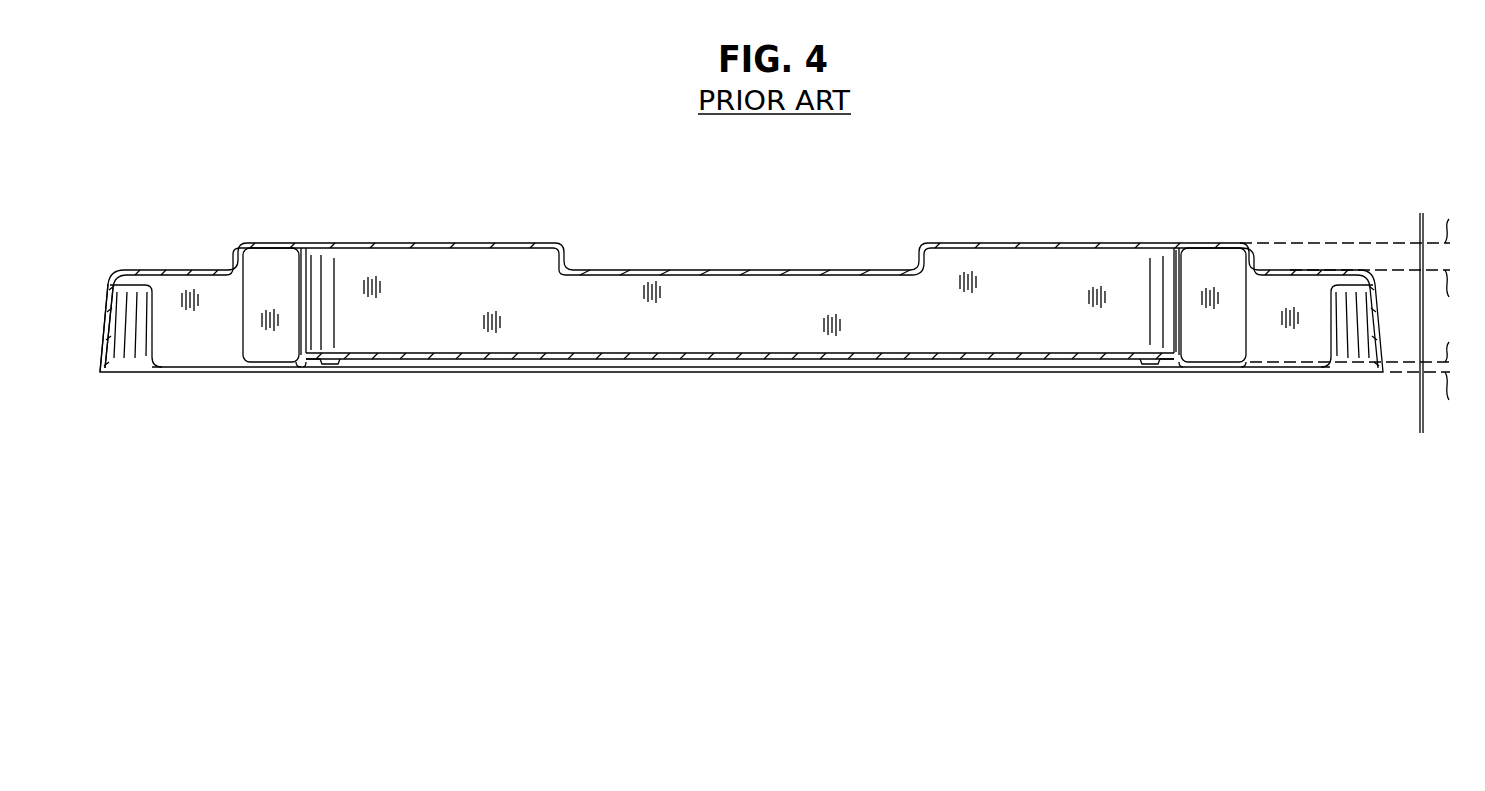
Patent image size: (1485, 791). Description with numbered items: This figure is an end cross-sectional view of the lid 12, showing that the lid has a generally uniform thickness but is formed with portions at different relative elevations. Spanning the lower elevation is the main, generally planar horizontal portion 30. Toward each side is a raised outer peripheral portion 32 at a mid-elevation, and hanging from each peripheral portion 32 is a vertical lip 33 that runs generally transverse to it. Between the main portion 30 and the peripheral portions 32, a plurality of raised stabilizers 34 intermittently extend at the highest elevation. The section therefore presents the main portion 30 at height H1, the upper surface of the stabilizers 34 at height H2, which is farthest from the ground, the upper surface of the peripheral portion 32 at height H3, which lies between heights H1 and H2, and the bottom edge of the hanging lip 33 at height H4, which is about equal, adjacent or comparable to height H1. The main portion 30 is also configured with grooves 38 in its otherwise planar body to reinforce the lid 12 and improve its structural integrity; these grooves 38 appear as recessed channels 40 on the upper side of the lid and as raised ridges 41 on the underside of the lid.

The lid 12 is at (1062, 166).
The main horizontal portion 30 is at (762, 358).
The raised outer peripheral portion 32 is at (742, 270).
The hanging vertical lip 33 is at (1380, 305).
The raised stabilizers 34 is at (455, 243).
The grooves 38 is at (1157, 365).
The recessed channels 40 is at (330, 362).
The raised ridges 41 is at (324, 368).
The height of main portion H1 is at (1447, 341).
The height of stabilizer upper surface H2 is at (1447, 219).
The height of peripheral portion upper surface H3 is at (1447, 295).
The height of lip bottom edge H4 is at (1447, 400).